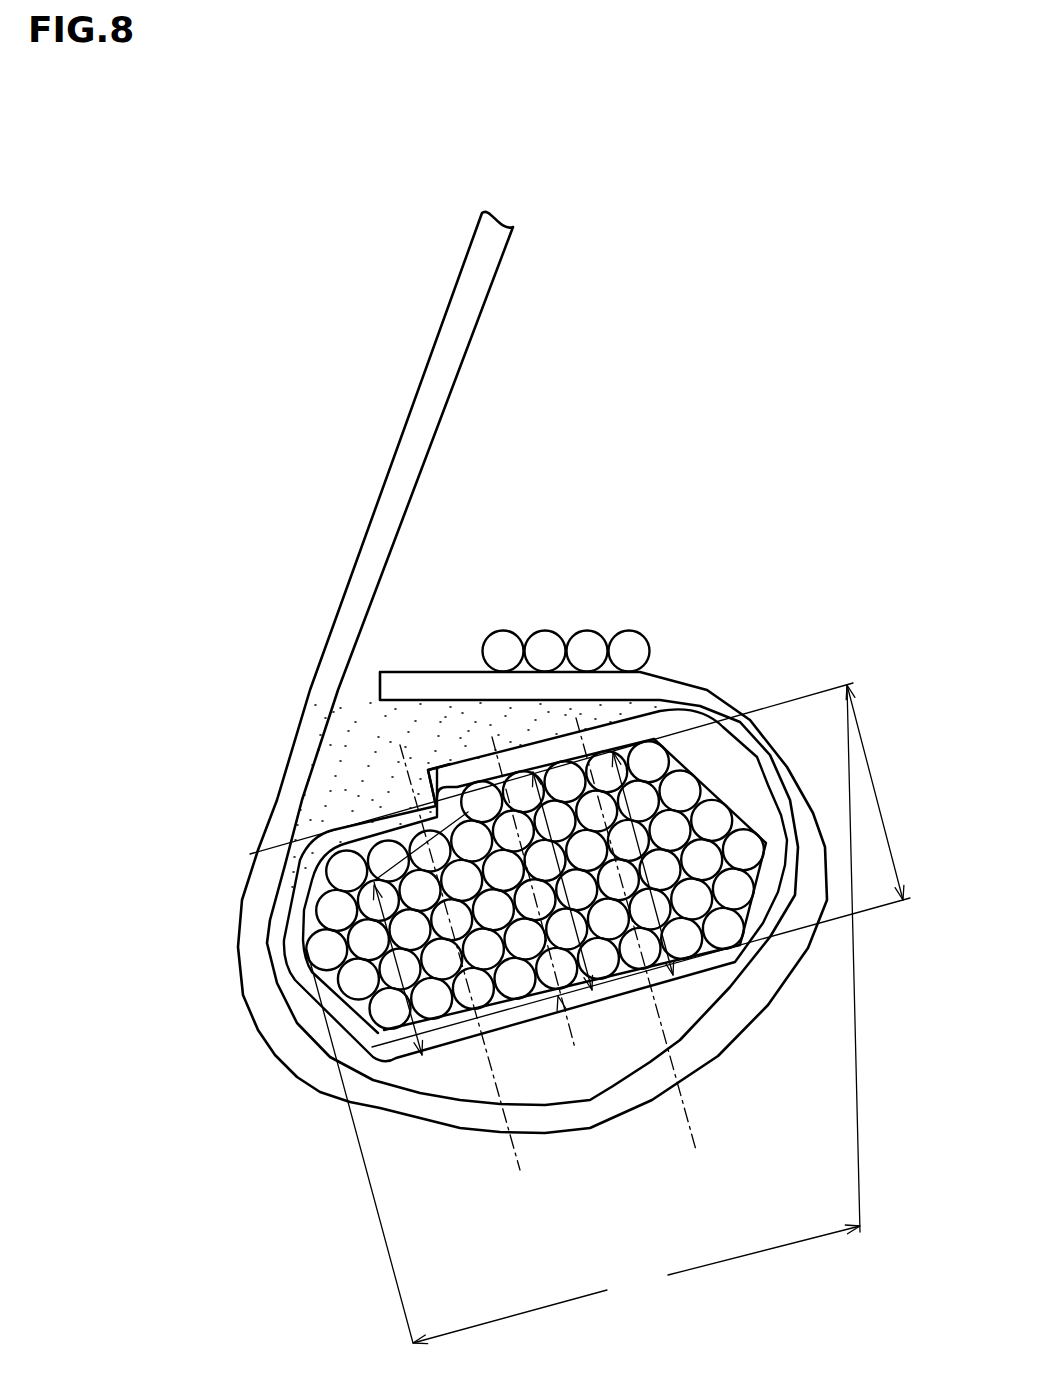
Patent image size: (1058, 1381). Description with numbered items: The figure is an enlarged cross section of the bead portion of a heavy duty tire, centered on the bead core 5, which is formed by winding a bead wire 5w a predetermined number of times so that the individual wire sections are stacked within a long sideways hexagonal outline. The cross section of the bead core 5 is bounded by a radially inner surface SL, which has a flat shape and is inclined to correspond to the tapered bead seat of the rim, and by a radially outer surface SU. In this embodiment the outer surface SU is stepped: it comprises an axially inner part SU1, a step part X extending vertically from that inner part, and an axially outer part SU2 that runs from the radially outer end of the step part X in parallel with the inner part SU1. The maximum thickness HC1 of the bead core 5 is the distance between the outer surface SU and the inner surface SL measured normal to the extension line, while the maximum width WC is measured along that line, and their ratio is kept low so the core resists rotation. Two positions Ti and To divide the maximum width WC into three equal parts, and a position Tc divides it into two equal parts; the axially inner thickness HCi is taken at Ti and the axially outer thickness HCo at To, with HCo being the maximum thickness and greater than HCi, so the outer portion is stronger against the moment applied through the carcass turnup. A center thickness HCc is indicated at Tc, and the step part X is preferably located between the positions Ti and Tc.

The radially outer surface SU is at (535, 712).
The axially inner part SU1 is at (373, 880).
The axially outer part SU2 is at (614, 762).
The step part X is at (439, 792).
The bead wire 5w is at (428, 884).
The bead core 5 is at (330, 918).
The maximum thickness HC1 is at (577, 791).
The axially inner thickness HCi is at (374, 888).
The center bead core height HCc is at (592, 990).
The axially outer thickness HCo is at (673, 975).
The axially inner position Ti is at (520, 1170).
The center position Tc is at (575, 1048).
The axially outer position To is at (696, 1150).
The radially inner surface SL is at (697, 1010).
The maximum width WC is at (583, 1014).